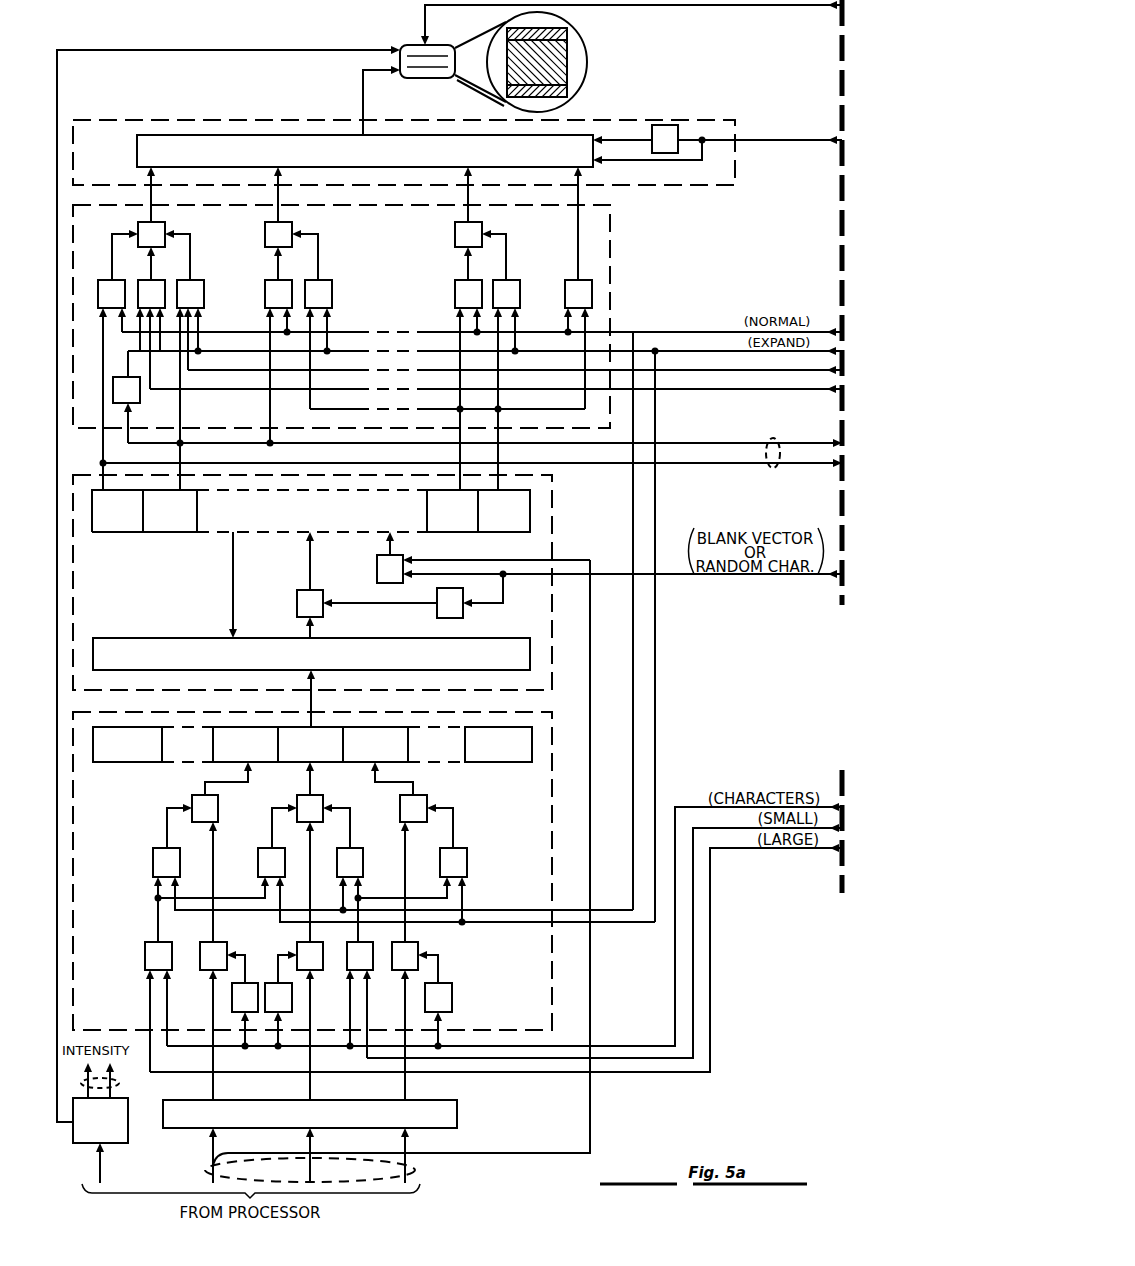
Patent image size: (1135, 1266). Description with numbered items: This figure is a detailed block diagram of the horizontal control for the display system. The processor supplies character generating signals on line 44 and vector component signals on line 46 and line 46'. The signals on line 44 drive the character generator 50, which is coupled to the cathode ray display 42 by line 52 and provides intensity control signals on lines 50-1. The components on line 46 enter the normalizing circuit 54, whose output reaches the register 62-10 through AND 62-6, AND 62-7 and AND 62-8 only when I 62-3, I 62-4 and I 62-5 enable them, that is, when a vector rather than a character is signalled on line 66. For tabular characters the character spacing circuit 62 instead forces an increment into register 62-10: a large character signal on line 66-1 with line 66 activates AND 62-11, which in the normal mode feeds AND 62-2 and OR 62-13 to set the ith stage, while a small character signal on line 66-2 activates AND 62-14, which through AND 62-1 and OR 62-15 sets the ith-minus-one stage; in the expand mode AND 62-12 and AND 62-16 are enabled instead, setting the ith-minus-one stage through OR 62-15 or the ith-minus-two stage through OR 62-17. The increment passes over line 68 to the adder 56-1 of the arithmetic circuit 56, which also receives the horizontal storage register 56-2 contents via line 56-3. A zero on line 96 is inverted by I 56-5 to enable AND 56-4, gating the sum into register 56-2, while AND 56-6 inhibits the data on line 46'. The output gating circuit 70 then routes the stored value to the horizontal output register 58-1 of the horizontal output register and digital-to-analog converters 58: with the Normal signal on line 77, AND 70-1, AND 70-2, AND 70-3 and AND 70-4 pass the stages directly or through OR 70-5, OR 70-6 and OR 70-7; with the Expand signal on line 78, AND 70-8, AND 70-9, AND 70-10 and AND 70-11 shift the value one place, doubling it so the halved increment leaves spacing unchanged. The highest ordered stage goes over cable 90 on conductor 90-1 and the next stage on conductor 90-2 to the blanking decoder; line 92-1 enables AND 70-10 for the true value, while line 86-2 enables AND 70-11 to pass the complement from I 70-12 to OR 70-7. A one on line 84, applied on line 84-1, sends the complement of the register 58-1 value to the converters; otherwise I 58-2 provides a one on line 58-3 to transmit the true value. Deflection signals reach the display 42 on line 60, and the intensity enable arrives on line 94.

The cathode ray display 42 is at (575, 41).
The character generating signal line 44 is at (100, 1170).
The vector component signal line 46 is at (330, 1155).
The data line 46' is at (420, 862).
The character generator 50 is at (128, 1138).
The intensity control signal lines 50-1 is at (119, 1083).
The character generator output line 52 is at (258, 50).
The normalizing circuit 54 is at (457, 1112).
The arithmetic circuit 56 is at (552, 497).
The adder 56-1 is at (478, 638).
The horizontal storage register 56-2 is at (172, 533).
The storage register output line 56-3 is at (233, 600).
The AND circuit 56-4 is at (297, 591).
The inverter 56-5 is at (437, 614).
The AND circuit 56-6 is at (377, 559).
The horizontal output register and digital-to-analog converters 58 is at (215, 120).
The horizontal output register 58-1 is at (137, 142).
The inverter 58-2 is at (680, 125).
The true value enable line 58-3 is at (620, 137).
The horizontal deflection signal line 60 is at (363, 90).
The character spacing circuit 62 is at (553, 743).
The AND circuit 62-1 is at (376, 842).
The AND circuit 62-2 is at (153, 852).
The inverter 62-3 is at (452, 998).
The inverter 62-4 is at (292, 998).
The inverter 62-5 is at (232, 998).
The AND circuit 62-6 is at (418, 948).
The AND circuit 62-7 is at (297, 948).
The AND circuit 62-8 is at (200, 953).
The register 62-10 is at (510, 763).
The AND circuit 62-11 is at (145, 952).
The AND circuit 62-12 is at (258, 857).
The OR circuit 62-13 is at (195, 795).
The AND circuit 62-14 is at (373, 965).
The OR circuit 62-15 is at (328, 786).
The AND circuit 62-16 is at (467, 856).
The OR circuit 62-17 is at (425, 795).
The character control line 66 is at (692, 803).
The large character line 66-1 is at (712, 852).
The small character line 66-2 is at (736, 826).
The spacing increment line 68 is at (311, 700).
The output gating circuit 70 is at (610, 227).
The AND circuit 70-1 is at (592, 288).
The AND circuit 70-2 is at (458, 278).
The AND circuit 70-3 is at (291, 278).
The AND circuit 70-4 is at (105, 278).
The OR circuit 70-5 is at (482, 225).
The OR circuit 70-6 is at (292, 226).
The OR circuit 70-7 is at (165, 226).
The AND circuit 70-8 is at (520, 278).
The AND circuit 70-9 is at (331, 279).
The AND circuit 70-10 is at (201, 279).
The AND circuit 70-11 is at (163, 278).
The inverter 70-12 is at (140, 400).
The Normal signal line 77 is at (633, 338).
The Expand signal line 78 is at (655, 357).
The complement control line 84 is at (765, 138).
The complement enable line 84-1 is at (628, 160).
The sector enable line 86-2 is at (708, 393).
The cable 90 is at (777, 468).
The conductor 90-1 is at (683, 467).
The conductor 90-2 is at (683, 447).
The true value enable line 92-1 is at (688, 374).
The intensity enable line 94 is at (750, 6).
The control line 96 is at (667, 576).